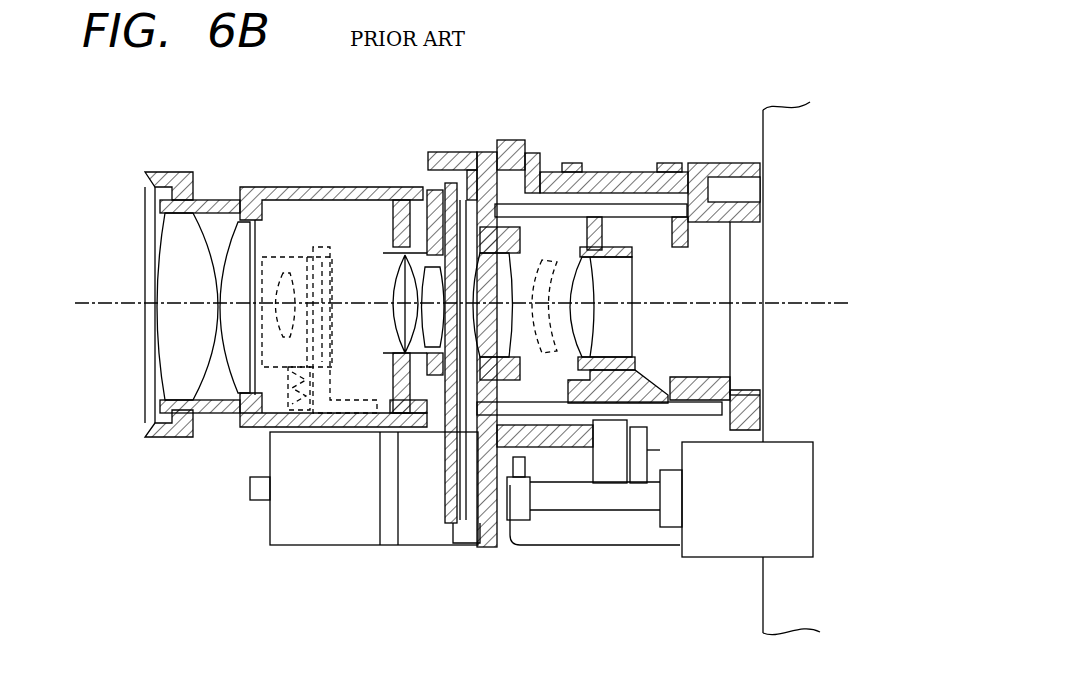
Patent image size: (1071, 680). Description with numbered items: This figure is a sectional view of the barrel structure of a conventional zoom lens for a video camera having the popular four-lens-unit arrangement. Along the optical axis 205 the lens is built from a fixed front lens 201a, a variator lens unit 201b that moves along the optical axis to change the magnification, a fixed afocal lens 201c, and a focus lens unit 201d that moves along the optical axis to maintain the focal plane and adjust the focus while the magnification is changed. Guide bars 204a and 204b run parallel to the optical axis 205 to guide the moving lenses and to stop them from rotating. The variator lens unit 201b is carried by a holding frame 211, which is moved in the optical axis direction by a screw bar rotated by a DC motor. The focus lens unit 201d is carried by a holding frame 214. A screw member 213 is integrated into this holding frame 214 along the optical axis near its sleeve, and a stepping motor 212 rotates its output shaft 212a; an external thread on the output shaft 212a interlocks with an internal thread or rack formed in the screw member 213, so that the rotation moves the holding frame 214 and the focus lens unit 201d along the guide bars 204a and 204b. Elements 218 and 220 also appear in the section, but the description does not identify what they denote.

The fixed front lens 201a is at (200, 228).
The variator lens unit 201b is at (385, 283).
The fixed afocal lens 201c is at (522, 270).
The focus lens unit 201d is at (612, 262).
The guide bar 204a is at (530, 204).
The guide bar 204b is at (763, 420).
The optical axis 205 is at (814, 300).
The holding frame 211 is at (430, 246).
The stepping motor 212 is at (713, 550).
The output shaft 212a is at (555, 504).
The screw member 213 is at (603, 484).
The holding frame 214 is at (638, 368).
The motor 218 is at (328, 530).
The camera body 220 is at (763, 135).